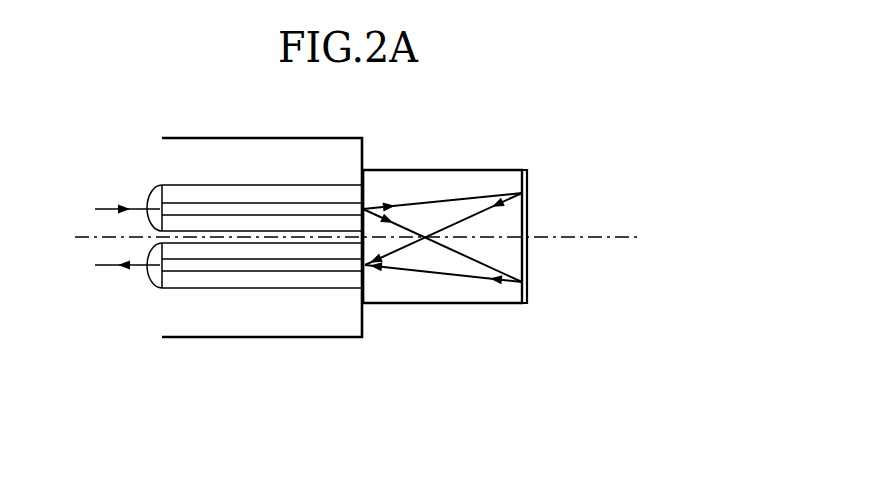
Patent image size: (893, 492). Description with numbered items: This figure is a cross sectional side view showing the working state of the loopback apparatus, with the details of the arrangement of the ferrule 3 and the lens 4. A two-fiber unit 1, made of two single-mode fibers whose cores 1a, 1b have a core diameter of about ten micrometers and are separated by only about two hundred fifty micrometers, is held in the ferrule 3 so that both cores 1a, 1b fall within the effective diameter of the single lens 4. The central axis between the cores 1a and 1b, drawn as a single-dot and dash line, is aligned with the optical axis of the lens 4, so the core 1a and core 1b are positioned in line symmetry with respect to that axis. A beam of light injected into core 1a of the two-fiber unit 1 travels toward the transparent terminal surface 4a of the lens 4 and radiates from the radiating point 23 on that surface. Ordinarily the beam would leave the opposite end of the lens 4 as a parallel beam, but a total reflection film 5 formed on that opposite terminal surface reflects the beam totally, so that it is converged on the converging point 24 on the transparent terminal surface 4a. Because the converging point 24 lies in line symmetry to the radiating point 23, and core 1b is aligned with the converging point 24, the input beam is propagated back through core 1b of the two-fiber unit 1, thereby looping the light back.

The two-fiber unit 1 is at (295, 310).
The core 1a is at (157, 205).
The core 1b is at (155, 268).
The ferrule 3 is at (180, 337).
The lens 4 is at (505, 303).
The transparent terminal surface 4a is at (364, 178).
The total reflection film 5 is at (527, 253).
The radiating point 23 is at (366, 204).
The converging point 24 is at (368, 266).